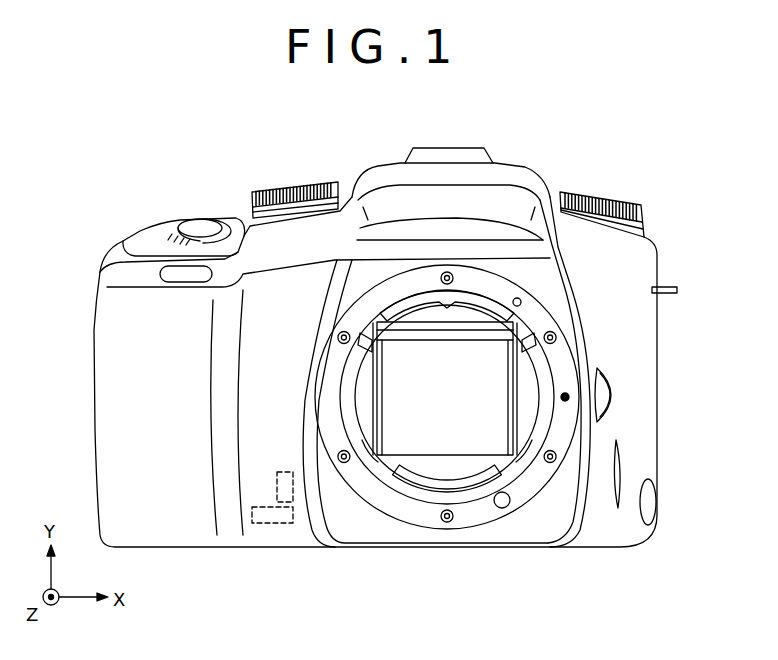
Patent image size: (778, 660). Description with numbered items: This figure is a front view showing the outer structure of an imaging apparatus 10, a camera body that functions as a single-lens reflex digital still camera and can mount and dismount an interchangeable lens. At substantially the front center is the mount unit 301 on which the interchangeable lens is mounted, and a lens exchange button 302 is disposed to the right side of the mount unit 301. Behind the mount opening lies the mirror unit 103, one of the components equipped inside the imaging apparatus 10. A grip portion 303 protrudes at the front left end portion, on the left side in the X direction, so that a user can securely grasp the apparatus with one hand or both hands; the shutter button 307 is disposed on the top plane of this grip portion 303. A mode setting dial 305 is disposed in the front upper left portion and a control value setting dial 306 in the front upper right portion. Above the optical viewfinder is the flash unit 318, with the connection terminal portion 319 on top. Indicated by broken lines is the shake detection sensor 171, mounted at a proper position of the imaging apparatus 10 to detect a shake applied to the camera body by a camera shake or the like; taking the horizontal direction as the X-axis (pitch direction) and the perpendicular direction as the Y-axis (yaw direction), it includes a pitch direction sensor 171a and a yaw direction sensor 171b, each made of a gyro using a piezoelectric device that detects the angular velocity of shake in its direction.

The imaging apparatus 10 is at (132, 222).
The mirror unit 103 is at (527, 407).
The shake detection sensor 171 is at (295, 549).
The pitch direction sensor 171a is at (265, 523).
The yaw direction sensor 171b is at (293, 497).
The mount unit 301 is at (487, 512).
The lens exchange button 302 is at (607, 397).
The grip portion 303 is at (123, 436).
The mode setting dial 305 is at (287, 190).
The control value setting dial 306 is at (600, 196).
The shutter button 307 is at (198, 225).
The flash unit 318 is at (363, 166).
The connection terminal portion 319 is at (452, 148).